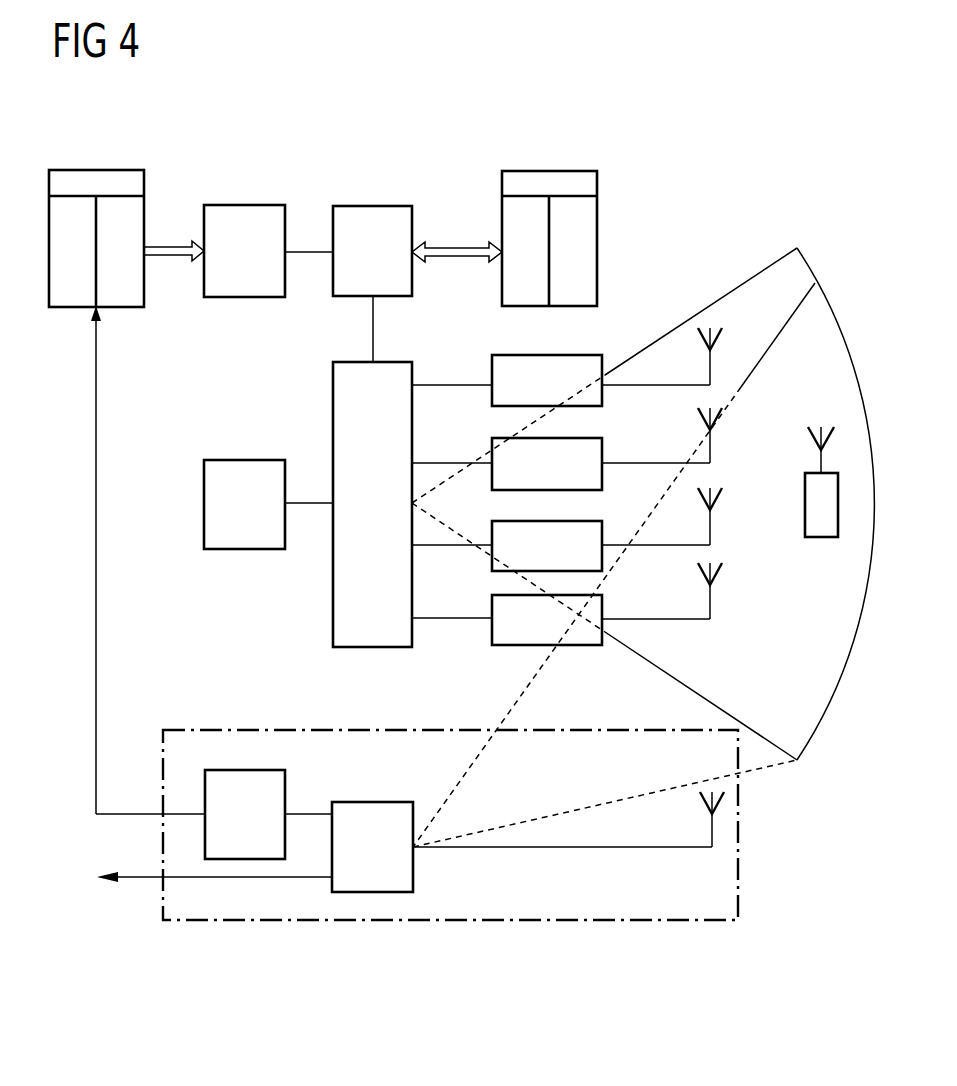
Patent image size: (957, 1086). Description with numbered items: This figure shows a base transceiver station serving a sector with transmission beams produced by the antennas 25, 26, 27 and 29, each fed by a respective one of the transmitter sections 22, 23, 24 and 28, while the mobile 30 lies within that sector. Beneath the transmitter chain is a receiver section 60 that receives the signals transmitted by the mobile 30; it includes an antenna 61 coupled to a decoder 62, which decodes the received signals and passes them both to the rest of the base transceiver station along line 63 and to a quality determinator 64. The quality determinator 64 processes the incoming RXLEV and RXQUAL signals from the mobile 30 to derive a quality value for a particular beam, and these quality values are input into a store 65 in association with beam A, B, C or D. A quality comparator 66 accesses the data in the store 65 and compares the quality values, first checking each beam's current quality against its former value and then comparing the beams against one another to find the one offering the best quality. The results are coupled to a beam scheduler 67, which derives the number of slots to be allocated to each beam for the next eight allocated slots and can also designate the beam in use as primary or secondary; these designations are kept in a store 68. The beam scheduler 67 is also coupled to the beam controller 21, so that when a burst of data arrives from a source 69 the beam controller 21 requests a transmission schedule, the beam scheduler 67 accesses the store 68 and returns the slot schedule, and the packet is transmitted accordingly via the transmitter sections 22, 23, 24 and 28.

The beam controller 21 is at (372, 647).
The transmitter section 22 is at (602, 451).
The transmitter section 23 is at (602, 561).
The transmitter section 24 is at (568, 645).
The antenna 25 is at (711, 438).
The antenna 26 is at (711, 520).
The antenna 27 is at (711, 598).
The transmitter section 28 is at (492, 372).
The antenna 29 is at (710, 360).
The mobile 30 is at (820, 538).
The receiver section 60 is at (474, 921).
The antenna 61 is at (712, 829).
The decoder 62 is at (373, 802).
The line 63 is at (138, 882).
The quality determinator 64 is at (285, 786).
The store 65 is at (96, 170).
The quality comparator 66 is at (244, 205).
The beam scheduler 67 is at (372, 206).
The store 68 is at (551, 171).
The source 69 is at (243, 460).